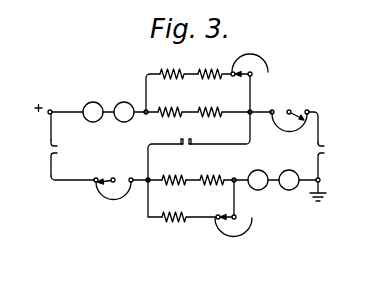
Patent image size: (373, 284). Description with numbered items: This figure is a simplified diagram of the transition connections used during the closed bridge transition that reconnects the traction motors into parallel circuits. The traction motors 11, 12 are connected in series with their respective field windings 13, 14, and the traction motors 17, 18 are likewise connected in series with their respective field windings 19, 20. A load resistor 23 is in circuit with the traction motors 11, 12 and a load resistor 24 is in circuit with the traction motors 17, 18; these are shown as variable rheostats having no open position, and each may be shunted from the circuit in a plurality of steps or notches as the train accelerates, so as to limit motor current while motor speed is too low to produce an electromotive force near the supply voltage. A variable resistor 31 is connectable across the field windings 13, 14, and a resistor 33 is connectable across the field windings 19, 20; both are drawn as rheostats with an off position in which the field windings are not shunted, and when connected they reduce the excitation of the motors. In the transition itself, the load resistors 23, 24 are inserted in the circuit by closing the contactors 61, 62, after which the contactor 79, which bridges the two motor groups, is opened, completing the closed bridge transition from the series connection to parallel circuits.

The traction motor 11 is at (93, 112).
The traction motor 12 is at (124, 112).
The field winding 13 is at (171, 105).
The field winding 14 is at (211, 109).
The traction motor 17 is at (258, 180).
The traction motor 18 is at (289, 180).
The field winding 19 is at (174, 171).
The field winding 20 is at (213, 171).
The load resistor 23 is at (289, 131).
The load resistor 24 is at (113, 199).
The variable resistor 31 is at (259, 59).
The resistor 33 is at (231, 236).
The contactor 61 is at (47, 152).
The contactor 62 is at (326, 150).
The contactor 79 is at (185, 139).